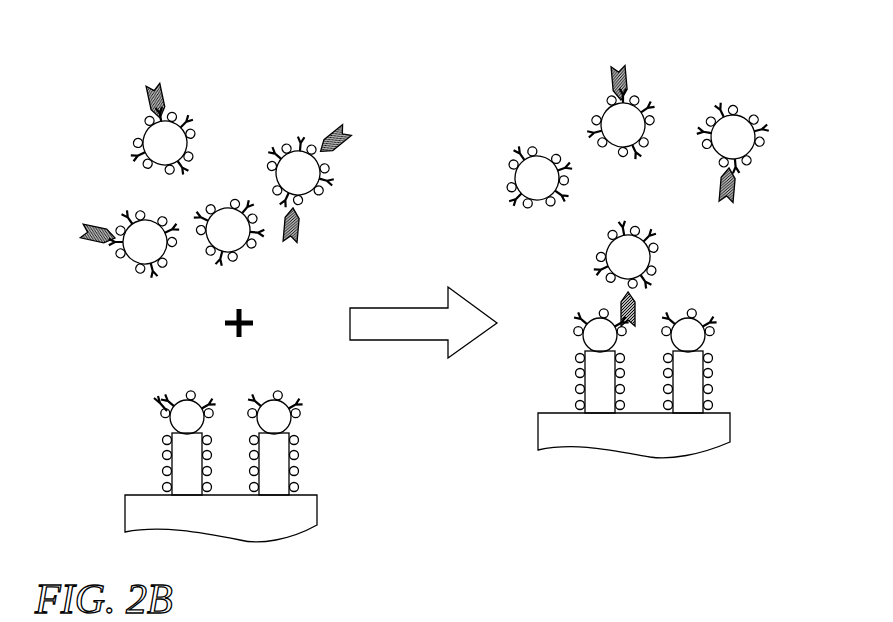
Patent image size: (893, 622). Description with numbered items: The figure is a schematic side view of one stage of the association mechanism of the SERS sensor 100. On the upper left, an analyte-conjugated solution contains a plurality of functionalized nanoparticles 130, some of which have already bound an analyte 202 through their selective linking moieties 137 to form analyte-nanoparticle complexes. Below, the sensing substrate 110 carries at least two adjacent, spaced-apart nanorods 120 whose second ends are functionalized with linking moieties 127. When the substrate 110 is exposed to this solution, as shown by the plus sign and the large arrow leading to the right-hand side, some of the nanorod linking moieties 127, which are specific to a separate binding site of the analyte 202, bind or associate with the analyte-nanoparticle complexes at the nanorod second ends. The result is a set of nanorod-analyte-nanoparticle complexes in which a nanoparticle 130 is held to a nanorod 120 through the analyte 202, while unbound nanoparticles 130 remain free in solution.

The SERS sensor 100 is at (320, 58).
The nanoparticle 130 is at (245, 127).
The analyte 202 is at (153, 83).
The linking moiety 137 is at (332, 192).
The linking moiety 127 is at (160, 400).
The nanorods 120 is at (286, 456).
The sensing substrate 110 is at (317, 510).